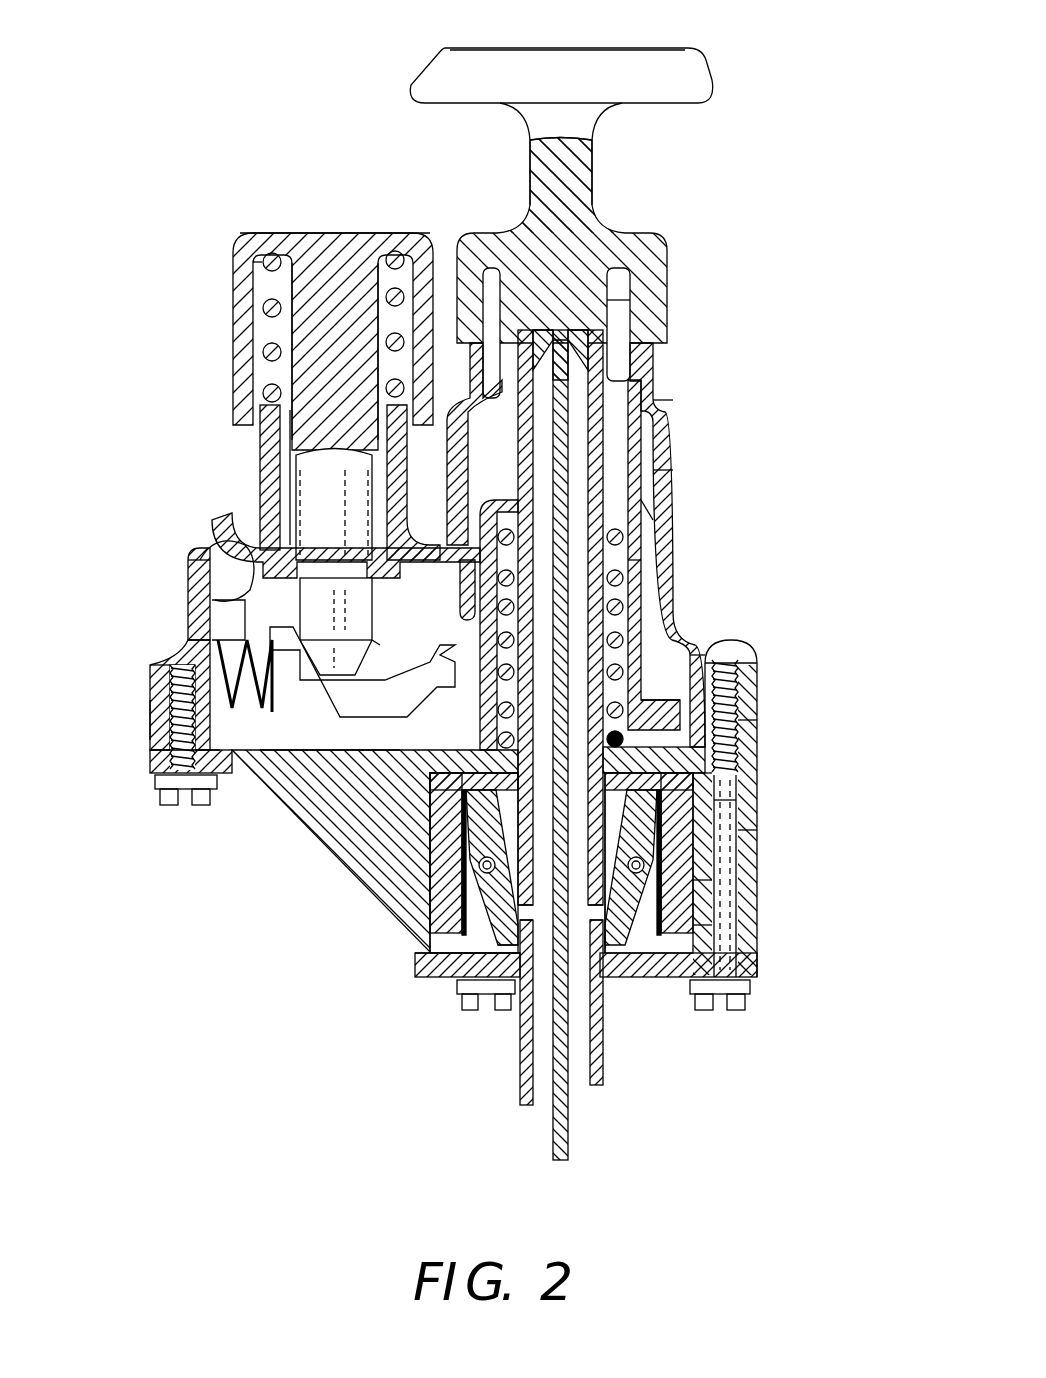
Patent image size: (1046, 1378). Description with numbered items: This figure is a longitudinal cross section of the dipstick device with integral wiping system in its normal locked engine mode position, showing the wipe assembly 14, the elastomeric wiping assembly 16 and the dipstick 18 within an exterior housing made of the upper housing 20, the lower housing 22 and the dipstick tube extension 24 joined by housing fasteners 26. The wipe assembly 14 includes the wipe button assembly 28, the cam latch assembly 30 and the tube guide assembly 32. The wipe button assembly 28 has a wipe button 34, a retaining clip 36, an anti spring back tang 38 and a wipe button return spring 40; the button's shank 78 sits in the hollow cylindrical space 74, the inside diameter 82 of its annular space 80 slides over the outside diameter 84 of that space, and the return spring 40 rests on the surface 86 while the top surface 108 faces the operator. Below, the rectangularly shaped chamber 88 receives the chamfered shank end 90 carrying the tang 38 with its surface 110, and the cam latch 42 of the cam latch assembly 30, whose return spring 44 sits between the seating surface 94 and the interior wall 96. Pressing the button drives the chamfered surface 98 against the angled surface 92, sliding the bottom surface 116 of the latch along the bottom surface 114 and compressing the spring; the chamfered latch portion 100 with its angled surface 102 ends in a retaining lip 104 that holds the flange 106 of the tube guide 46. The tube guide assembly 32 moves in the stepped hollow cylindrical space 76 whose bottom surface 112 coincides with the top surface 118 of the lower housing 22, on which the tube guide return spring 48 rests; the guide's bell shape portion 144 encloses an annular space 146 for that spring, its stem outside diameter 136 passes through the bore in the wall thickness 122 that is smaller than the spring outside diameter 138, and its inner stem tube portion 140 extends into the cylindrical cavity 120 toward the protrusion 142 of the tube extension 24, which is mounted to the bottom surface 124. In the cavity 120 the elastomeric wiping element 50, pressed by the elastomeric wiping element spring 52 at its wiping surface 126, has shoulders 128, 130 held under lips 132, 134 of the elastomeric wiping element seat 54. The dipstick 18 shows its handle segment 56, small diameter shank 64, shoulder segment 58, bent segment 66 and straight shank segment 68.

The wipe assembly 14 is at (136, 648).
The elastomeric wiping assembly 16 is at (770, 858).
The dipstick 18 is at (712, 67).
The upper housing 20 is at (738, 640).
The lower housing 22 is at (757, 962).
The dipstick tube extension 24 is at (628, 985).
The housing fasteners 26 is at (170, 795).
The wipe button assembly 28 is at (246, 212).
The cam latch assembly 30 is at (188, 626).
The tube guide assembly 32 is at (676, 440).
The wipe button 34 is at (331, 232).
The retaining clip 36 is at (215, 548).
The anti spring back tang 38 is at (240, 545).
The wipe button return spring 40 is at (255, 266).
The cam latch 42 is at (320, 745).
The cam latch return spring 44 is at (205, 655).
The tube guide 46 is at (648, 630).
The tube guide return spring 48 is at (709, 660).
The elastomeric wiping element 50 is at (690, 985).
The elastomeric wiping element spring 52 is at (725, 893).
The elastomeric wiping element seat 54 is at (735, 926).
The handle segment 56 is at (622, 50).
The shoulder segment 58 is at (670, 265).
The small diameter shank 64 is at (592, 192).
The bent segment 66 is at (580, 373).
The straight shank segment 68 is at (570, 1152).
The hollow cylindrical space 74 is at (282, 432).
The hollow cylindrical space 76 is at (618, 300).
The shank 78 is at (262, 378).
The annular space 80 is at (262, 330).
The inside diameter 82 is at (260, 298).
The outside diameter 84 is at (266, 452).
The surface 86 is at (262, 405).
The rectangularly shaped chamber 88 is at (228, 592).
The chamfered shank end 90 is at (212, 616).
The angled surface 92 is at (356, 670).
The seating surface 94 is at (182, 722).
The interior wall 96 is at (192, 555).
The chamfered surface 98 is at (372, 616).
The chamfered latch portion 100 is at (420, 690).
The angled surface 102 is at (374, 646).
The retaining lip 104 is at (370, 760).
The flange 106 is at (722, 680).
The top surface 108 is at (356, 233).
The surface 110 is at (440, 590).
The bottom surface 112 is at (735, 774).
The bottom surface 114 is at (165, 757).
The bottom surface 116 is at (250, 785).
The top surface 118 is at (742, 731).
The cylindrical cavity 120 is at (665, 990).
The wall thickness 122 is at (725, 806).
The bottom surface 124 is at (448, 968).
The wiping surface 126 is at (760, 831).
The shoulder 128 is at (462, 800).
The shoulder 130 is at (430, 940).
The lip 132 is at (490, 850).
The lip 134 is at (437, 977).
The stem outside diameter 136 is at (641, 546).
The outside diameter 138 is at (636, 570).
The inner stem tube portion 140 is at (672, 422).
The protrusion 142 is at (498, 982).
The bell shape portion 144 is at (680, 473).
The annular space 146 is at (668, 520).